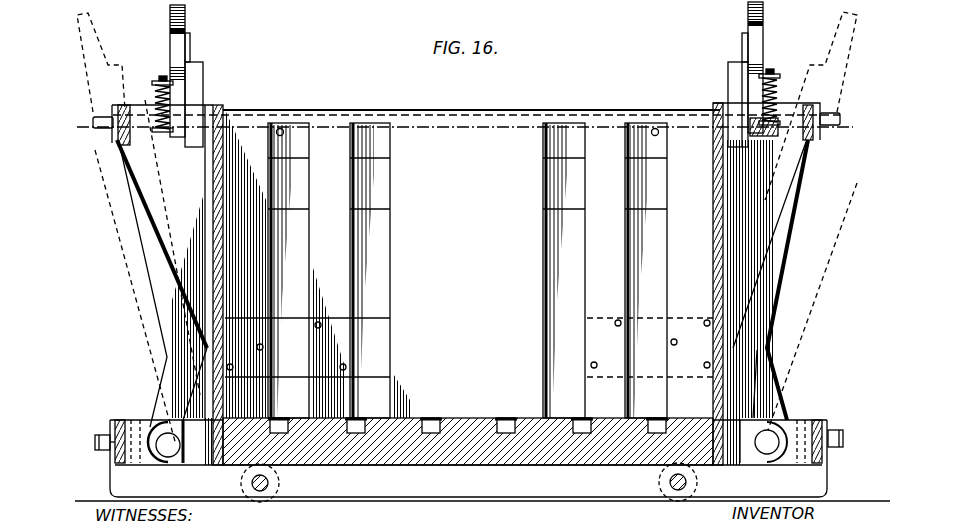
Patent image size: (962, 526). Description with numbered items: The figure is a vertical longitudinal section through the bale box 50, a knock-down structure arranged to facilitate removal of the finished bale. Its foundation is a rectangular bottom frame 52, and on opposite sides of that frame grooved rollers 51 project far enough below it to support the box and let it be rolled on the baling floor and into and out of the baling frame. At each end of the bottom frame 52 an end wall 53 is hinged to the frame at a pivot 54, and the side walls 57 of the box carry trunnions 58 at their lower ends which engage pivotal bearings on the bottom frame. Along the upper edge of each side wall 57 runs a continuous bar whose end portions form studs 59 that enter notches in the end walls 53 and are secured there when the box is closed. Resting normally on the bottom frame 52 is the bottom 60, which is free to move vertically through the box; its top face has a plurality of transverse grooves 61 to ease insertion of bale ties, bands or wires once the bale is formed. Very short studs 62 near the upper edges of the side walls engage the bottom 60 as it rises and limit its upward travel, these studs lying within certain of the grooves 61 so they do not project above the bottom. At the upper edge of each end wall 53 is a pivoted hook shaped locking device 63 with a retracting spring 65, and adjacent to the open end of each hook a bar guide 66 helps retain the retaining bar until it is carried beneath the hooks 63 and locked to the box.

The bale box 50 is at (465, 103).
The grooved rollers 51 is at (266, 0).
The bottom frame 52 is at (466, 0).
The end walls 53 is at (215, 104).
The pivots of end walls 54 is at (170, 432).
The side walls 57 is at (470, 318).
The trunnions 58 is at (100, 432).
The studs 59 is at (107, 130).
The bottom 60 is at (475, 507).
The transverse grooves 61 is at (506, 418).
The studs 62 is at (281, 128).
The hook shaped locking device 63 is at (183, 22).
The retracting spring 65 is at (155, 93).
The bar guide 66 is at (198, 62).